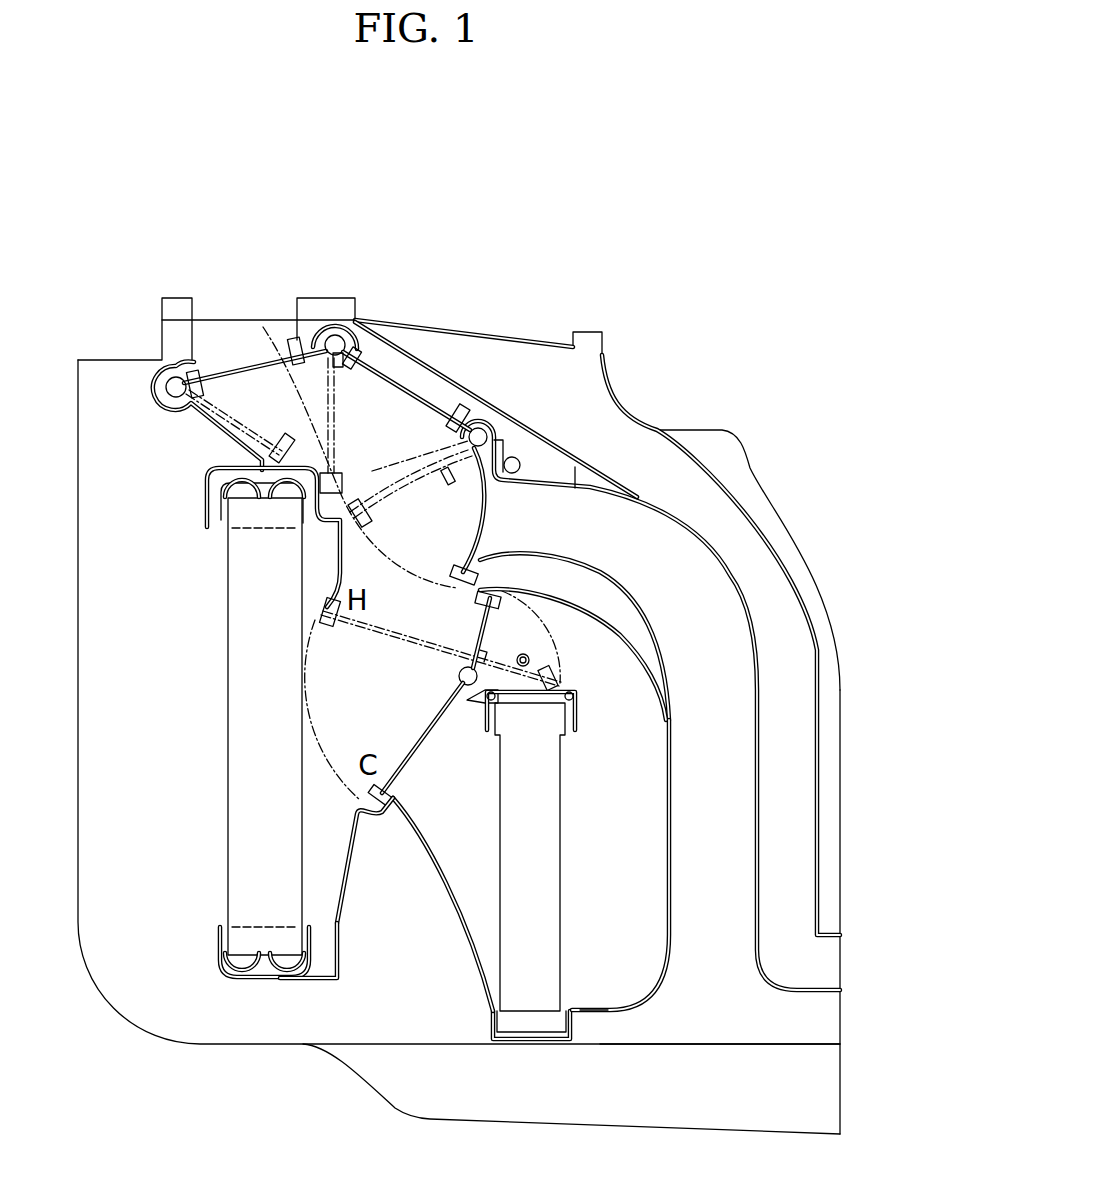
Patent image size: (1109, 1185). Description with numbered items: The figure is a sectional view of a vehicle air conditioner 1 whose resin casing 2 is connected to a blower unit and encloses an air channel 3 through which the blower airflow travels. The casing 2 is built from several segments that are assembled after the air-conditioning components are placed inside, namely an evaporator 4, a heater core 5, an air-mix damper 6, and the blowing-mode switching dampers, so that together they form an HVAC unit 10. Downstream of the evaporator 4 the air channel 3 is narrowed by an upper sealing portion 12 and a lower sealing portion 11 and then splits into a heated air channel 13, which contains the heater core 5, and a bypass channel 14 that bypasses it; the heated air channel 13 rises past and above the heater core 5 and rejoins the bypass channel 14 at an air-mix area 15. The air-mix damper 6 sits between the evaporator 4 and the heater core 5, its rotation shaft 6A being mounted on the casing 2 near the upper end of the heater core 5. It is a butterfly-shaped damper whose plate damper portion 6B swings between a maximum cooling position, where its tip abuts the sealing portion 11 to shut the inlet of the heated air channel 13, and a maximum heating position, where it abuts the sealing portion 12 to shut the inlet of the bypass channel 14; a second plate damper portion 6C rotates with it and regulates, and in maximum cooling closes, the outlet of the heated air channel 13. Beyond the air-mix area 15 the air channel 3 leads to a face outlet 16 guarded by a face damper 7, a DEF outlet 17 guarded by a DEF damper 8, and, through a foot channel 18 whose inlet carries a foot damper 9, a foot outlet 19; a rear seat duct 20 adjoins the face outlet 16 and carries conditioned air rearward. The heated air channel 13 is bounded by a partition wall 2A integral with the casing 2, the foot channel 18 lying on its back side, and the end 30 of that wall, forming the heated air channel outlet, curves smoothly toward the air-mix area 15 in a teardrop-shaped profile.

The vehicle air conditioner 1 is at (660, 262).
The casing 2 is at (307, 1000).
The partition wall 2A is at (668, 822).
The air channel 3 is at (315, 768).
The evaporator 4 is at (230, 626).
The heater core 5 is at (548, 790).
The air-mix damper 6 is at (400, 738).
The rotation shaft 6A is at (460, 676).
The plate damper portion 6B is at (405, 770).
The plate damper portion 6C is at (557, 628).
The face damper 7 is at (393, 370).
The DEF damper 8 is at (262, 340).
The foot damper 9 is at (485, 523).
The HVAC unit 10 is at (140, 1053).
The sealing portion 11 is at (393, 815).
The sealing portion 12 is at (328, 610).
The heated air channel 13 is at (625, 975).
The bypass channel 14 is at (350, 645).
The air-mix area 15 is at (413, 603).
The face outlet 16 is at (430, 388).
The DEF outlet 17 is at (215, 343).
The foot channel 18 is at (690, 580).
The foot outlet 19 is at (720, 995).
The rear seat duct 20 is at (668, 465).
The end of partition wall 30 is at (575, 580).